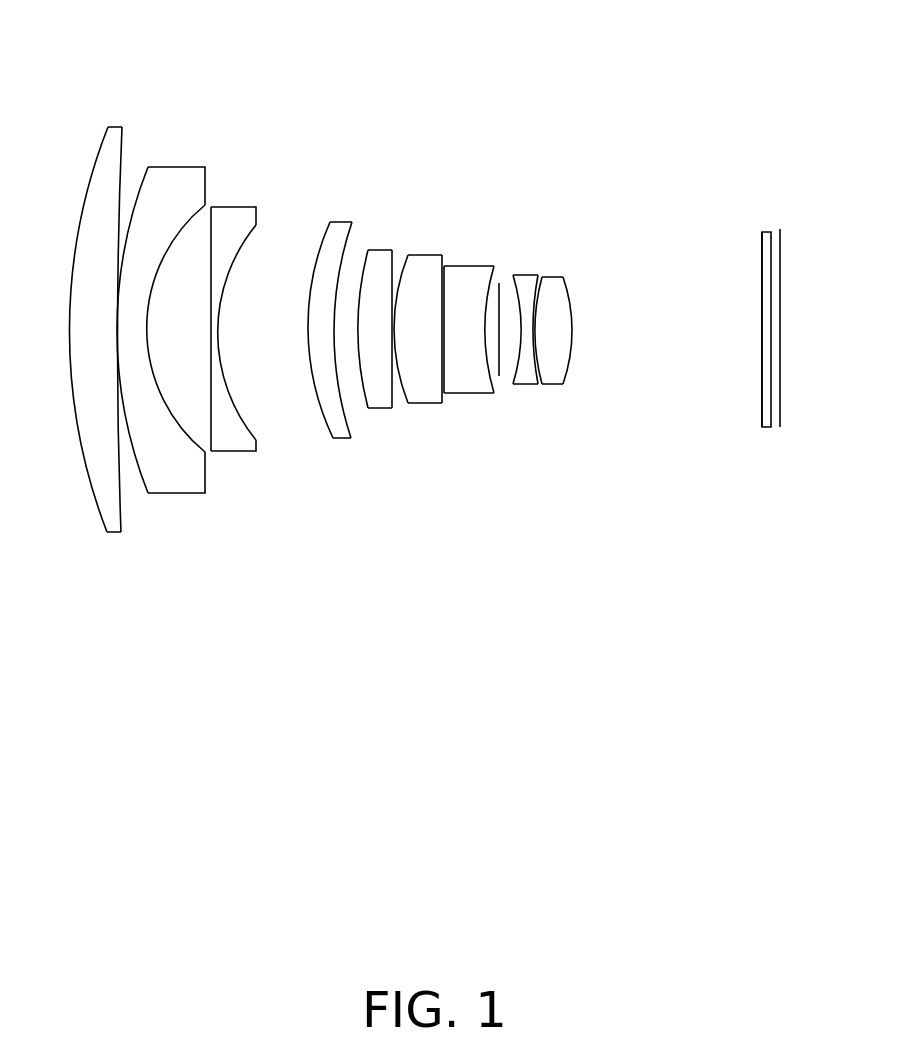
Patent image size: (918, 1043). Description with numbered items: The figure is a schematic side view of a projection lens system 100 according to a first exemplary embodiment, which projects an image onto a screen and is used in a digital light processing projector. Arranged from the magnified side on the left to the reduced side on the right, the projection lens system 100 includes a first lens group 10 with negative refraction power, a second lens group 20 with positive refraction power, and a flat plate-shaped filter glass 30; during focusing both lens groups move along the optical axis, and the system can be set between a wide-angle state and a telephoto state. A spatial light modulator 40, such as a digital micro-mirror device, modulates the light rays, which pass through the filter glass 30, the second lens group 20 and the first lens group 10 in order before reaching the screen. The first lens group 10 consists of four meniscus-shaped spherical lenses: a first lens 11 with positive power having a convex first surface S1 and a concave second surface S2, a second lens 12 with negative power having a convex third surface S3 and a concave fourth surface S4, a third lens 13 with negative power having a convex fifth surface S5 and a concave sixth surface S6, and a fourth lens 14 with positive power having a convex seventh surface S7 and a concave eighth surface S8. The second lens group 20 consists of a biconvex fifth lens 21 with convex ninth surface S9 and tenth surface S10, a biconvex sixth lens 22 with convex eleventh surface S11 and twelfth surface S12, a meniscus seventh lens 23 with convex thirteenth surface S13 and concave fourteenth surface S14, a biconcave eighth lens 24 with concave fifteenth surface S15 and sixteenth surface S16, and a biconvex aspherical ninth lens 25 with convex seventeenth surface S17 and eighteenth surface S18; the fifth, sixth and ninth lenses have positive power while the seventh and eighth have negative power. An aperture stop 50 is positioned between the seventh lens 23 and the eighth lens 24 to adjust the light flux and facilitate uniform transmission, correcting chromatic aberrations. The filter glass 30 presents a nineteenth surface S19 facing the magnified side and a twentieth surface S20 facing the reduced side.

The projection lens system 100 is at (231, 68).
The first lens group 10 is at (360, 503).
The first lens 11 is at (115, 523).
The second lens 12 is at (173, 482).
The third lens 13 is at (237, 445).
The fourth lens 14 is at (345, 440).
The second lens group 20 is at (592, 473).
The fifth lens 21 is at (378, 398).
The sixth lens 22 is at (423, 392).
The seventh lens 23 is at (468, 382).
The eighth lens 24 is at (522, 383).
The ninth lens 25 is at (555, 368).
The filter glass 30 is at (762, 417).
The spatial light modulator 40 is at (780, 415).
The aperture stop 50 is at (500, 283).
The first surface S1 is at (93, 175).
The second surface S2 is at (122, 143).
The third surface S3 is at (139, 177).
The fourth surface S4 is at (158, 262).
The fifth surface S5 is at (205, 228).
The sixth surface S6 is at (245, 240).
The seventh surface S7 is at (316, 270).
The eighth surface S8 is at (350, 233).
The ninth surface S9 is at (362, 290).
The tenth surface S10 is at (393, 257).
The eleventh surface S11 is at (402, 380).
The twelfth surface S12 is at (445, 257).
The thirteenth surface S13 is at (443, 315).
The fourteenth surface S14 is at (488, 287).
The fifteenth surface S15 is at (520, 317).
The sixteenth surface S16 is at (538, 276).
The seventeenth surface S17 is at (542, 297).
The convex eighteenth surface S18 is at (572, 351).
The nineteenth surface S19 is at (762, 250).
The twentieth surface S20 is at (780, 230).